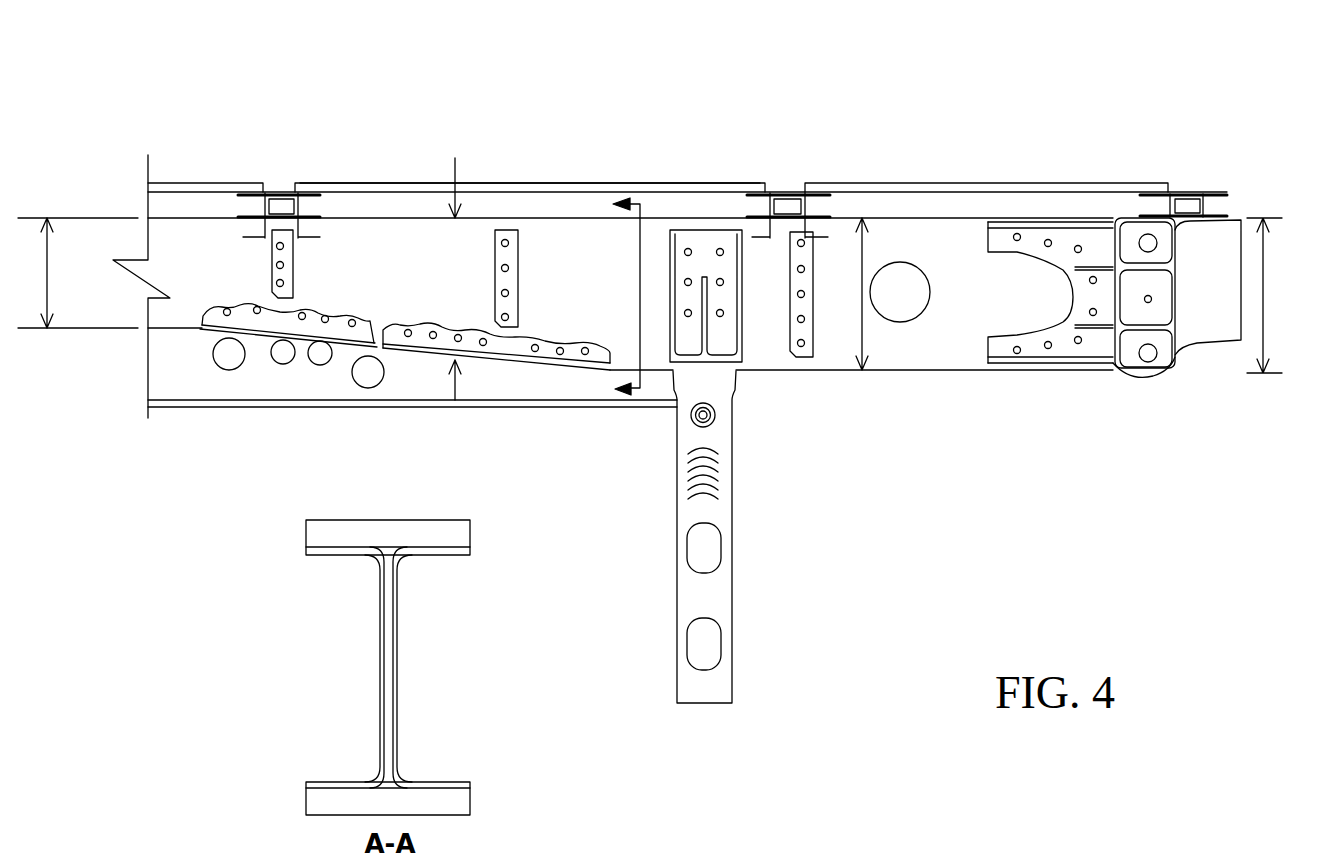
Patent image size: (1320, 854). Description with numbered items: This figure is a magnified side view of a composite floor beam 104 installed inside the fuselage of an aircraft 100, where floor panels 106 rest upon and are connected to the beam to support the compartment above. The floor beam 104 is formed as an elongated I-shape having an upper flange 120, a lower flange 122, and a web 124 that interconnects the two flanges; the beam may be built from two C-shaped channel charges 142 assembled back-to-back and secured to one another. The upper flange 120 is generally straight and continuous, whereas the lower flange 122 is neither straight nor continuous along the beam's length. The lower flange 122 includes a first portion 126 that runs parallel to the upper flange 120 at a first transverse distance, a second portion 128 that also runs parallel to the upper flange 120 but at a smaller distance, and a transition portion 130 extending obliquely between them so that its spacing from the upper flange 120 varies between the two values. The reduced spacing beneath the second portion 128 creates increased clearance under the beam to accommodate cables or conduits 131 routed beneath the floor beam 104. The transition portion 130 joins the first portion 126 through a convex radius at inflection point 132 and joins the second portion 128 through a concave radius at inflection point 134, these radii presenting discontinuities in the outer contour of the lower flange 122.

The aircraft 100 is at (947, 77).
The floor beam 104 is at (960, 263).
The floor panels 106 is at (412, 182).
The upper flange 120 is at (538, 217).
The lower flange 122 is at (930, 370).
The web 124 is at (210, 238).
The first portion 126 is at (773, 380).
The second portion 128 is at (172, 328).
The transition portion 130 is at (382, 348).
The cables or conduits 131 is at (282, 364).
The inflection point 132 is at (507, 367).
The inflection point 134 is at (262, 332).
The C-shaped channel charge 142 is at (587, 262).